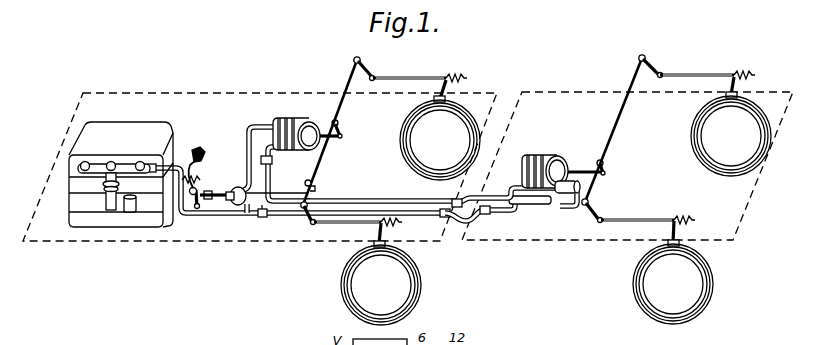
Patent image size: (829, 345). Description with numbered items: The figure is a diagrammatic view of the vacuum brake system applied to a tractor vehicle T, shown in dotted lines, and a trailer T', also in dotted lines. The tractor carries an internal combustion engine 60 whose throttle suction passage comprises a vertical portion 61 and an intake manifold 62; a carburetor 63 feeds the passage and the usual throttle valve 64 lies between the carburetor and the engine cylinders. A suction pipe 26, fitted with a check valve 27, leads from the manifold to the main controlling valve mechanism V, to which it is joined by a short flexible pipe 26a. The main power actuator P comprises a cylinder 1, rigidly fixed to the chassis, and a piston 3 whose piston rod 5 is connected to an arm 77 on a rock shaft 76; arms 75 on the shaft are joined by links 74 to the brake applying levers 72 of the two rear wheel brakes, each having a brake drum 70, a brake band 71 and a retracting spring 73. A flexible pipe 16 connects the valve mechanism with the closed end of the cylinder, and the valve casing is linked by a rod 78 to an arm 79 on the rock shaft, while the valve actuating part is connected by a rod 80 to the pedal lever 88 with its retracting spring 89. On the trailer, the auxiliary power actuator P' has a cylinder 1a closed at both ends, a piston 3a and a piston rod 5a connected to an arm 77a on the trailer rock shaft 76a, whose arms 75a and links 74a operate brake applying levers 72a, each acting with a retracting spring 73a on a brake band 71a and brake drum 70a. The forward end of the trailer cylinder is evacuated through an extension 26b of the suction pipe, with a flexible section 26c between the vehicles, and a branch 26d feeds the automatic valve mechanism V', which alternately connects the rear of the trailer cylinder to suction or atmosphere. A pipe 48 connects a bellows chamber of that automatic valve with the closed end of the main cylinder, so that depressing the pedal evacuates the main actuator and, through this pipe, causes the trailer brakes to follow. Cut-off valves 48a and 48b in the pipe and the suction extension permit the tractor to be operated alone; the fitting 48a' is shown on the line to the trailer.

The tractor vehicle T is at (260, 159).
The trailer T' is at (627, 157).
The internal combustion engine 60 is at (121, 174).
The vertical portion of suction passage 61 is at (100, 196).
The intake manifold 62 is at (78, 168).
The carburetor 63 is at (130, 213).
The throttle valve 64 is at (112, 212).
The check valve 27 is at (152, 163).
The suction pipe 26 is at (228, 217).
The short flexible pipe 26a is at (247, 216).
The suction pipe extension 26b is at (444, 217).
The flexible section 26c is at (465, 224).
The suction pipe 26d is at (536, 206).
The flexible pipe 16 is at (249, 130).
The cylinder 1 is at (279, 125).
The main power actuator P is at (296, 127).
The piston 3 is at (303, 124).
The piston rod 5 is at (338, 138).
The pipe 48 is at (395, 200).
The cut-off valve 48a is at (283, 164).
The conduit fitting 48a' is at (514, 195).
The cut-off valve 48b is at (267, 216).
The rod or link 78 is at (278, 200).
The arm 79 is at (314, 189).
The rock shaft 76 is at (318, 168).
The arm 77 is at (341, 131).
The arms 75 is at (365, 67).
The links 74 is at (410, 76).
The retracting spring 73 is at (456, 76).
The brake applying lever 72 is at (439, 86).
The brake band 71 is at (407, 118).
The brake drum 70 is at (411, 136).
The rod or link 80 is at (207, 210).
The pedal lever 88 is at (195, 172).
The retracting spring 89 is at (203, 180).
The controlling valve mechanism V is at (267, 204).
The auxiliary power actuator P' is at (545, 164).
The cylinder 1a is at (558, 161).
The piston 3a is at (528, 159).
The piston rod 5a is at (583, 170).
The automatic valve mechanism V' is at (567, 208).
The arm 77a is at (606, 167).
The rock shaft 76a is at (621, 116).
The arms 75a is at (648, 60).
The links 74a is at (690, 74).
The retracting spring 73a is at (745, 73).
The brake applying lever 72a is at (728, 84).
The brake band 71a is at (692, 131).
The brake drum 70a is at (702, 136).